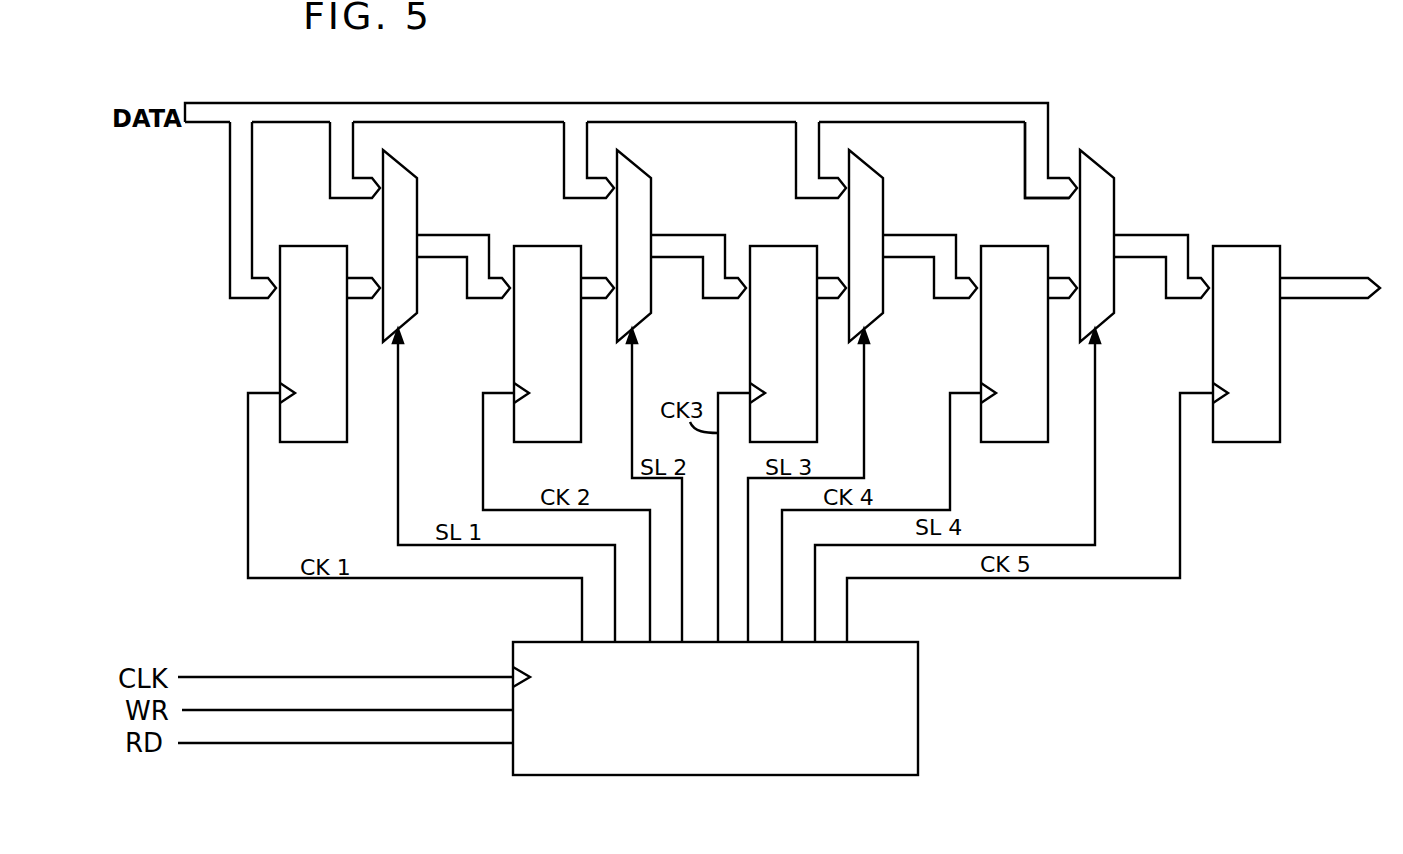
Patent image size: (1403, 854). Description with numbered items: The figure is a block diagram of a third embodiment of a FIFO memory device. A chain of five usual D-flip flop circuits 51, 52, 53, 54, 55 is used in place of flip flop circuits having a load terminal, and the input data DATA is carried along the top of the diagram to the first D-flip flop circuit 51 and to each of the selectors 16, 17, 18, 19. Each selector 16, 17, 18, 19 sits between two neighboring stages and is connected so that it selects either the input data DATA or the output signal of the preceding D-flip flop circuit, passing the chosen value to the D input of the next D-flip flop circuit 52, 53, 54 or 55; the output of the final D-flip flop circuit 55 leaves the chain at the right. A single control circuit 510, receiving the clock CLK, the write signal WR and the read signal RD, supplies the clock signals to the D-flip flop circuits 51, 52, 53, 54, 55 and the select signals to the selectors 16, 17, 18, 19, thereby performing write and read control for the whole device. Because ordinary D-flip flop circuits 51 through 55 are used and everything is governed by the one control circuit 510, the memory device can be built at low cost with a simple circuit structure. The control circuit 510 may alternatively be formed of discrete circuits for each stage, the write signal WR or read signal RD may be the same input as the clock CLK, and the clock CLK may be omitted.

The selector 16 is at (410, 173).
The selector 17 is at (644, 173).
The selector 18 is at (877, 173).
The selector 19 is at (1108, 173).
The D-flip flop circuit 51 is at (305, 247).
The D-flip flop circuit 52 is at (538, 247).
The D-flip flop circuit 53 is at (773, 247).
The D-flip flop circuit 54 is at (1002, 247).
The D-flip flop circuit 55 is at (1238, 247).
The control circuit 510 is at (918, 681).